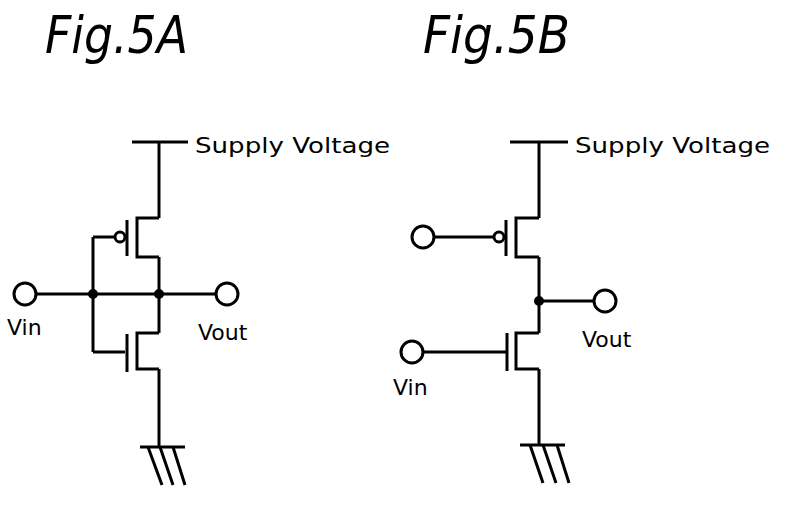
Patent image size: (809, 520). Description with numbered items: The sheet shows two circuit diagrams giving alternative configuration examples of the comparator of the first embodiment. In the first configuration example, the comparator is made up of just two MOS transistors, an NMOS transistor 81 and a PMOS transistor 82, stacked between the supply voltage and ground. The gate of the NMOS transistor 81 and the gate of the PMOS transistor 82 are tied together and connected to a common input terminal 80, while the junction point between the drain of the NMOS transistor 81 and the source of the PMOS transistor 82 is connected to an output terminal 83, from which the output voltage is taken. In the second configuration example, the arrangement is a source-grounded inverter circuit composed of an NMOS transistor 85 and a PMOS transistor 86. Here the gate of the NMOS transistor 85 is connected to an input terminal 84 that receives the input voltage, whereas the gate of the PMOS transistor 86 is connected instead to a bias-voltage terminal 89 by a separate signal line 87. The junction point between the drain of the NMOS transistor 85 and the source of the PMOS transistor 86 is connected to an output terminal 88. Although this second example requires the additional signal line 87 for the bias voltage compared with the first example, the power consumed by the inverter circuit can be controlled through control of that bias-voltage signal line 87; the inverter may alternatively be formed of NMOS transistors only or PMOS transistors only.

In FIG. 5A, the input terminal 80 is at (27, 284).
In FIG. 5A, the NMOS transistor 81 is at (148, 382).
In FIG. 5A, the PMOS transistor 82 is at (147, 205).
In FIG. 5A, the output terminal 83 is at (229, 284).
In FIG. 5B, the input terminal 84 is at (400, 352).
In FIG. 5B, the NMOS transistor 85 is at (528, 380).
In FIG. 5B, the PMOS transistor 86 is at (525, 203).
In FIG. 5B, the signal line 87 is at (450, 240).
In FIG. 5B, the output terminal 88 is at (604, 290).
In FIG. 5B, the bias-voltage terminal 89 is at (411, 237).